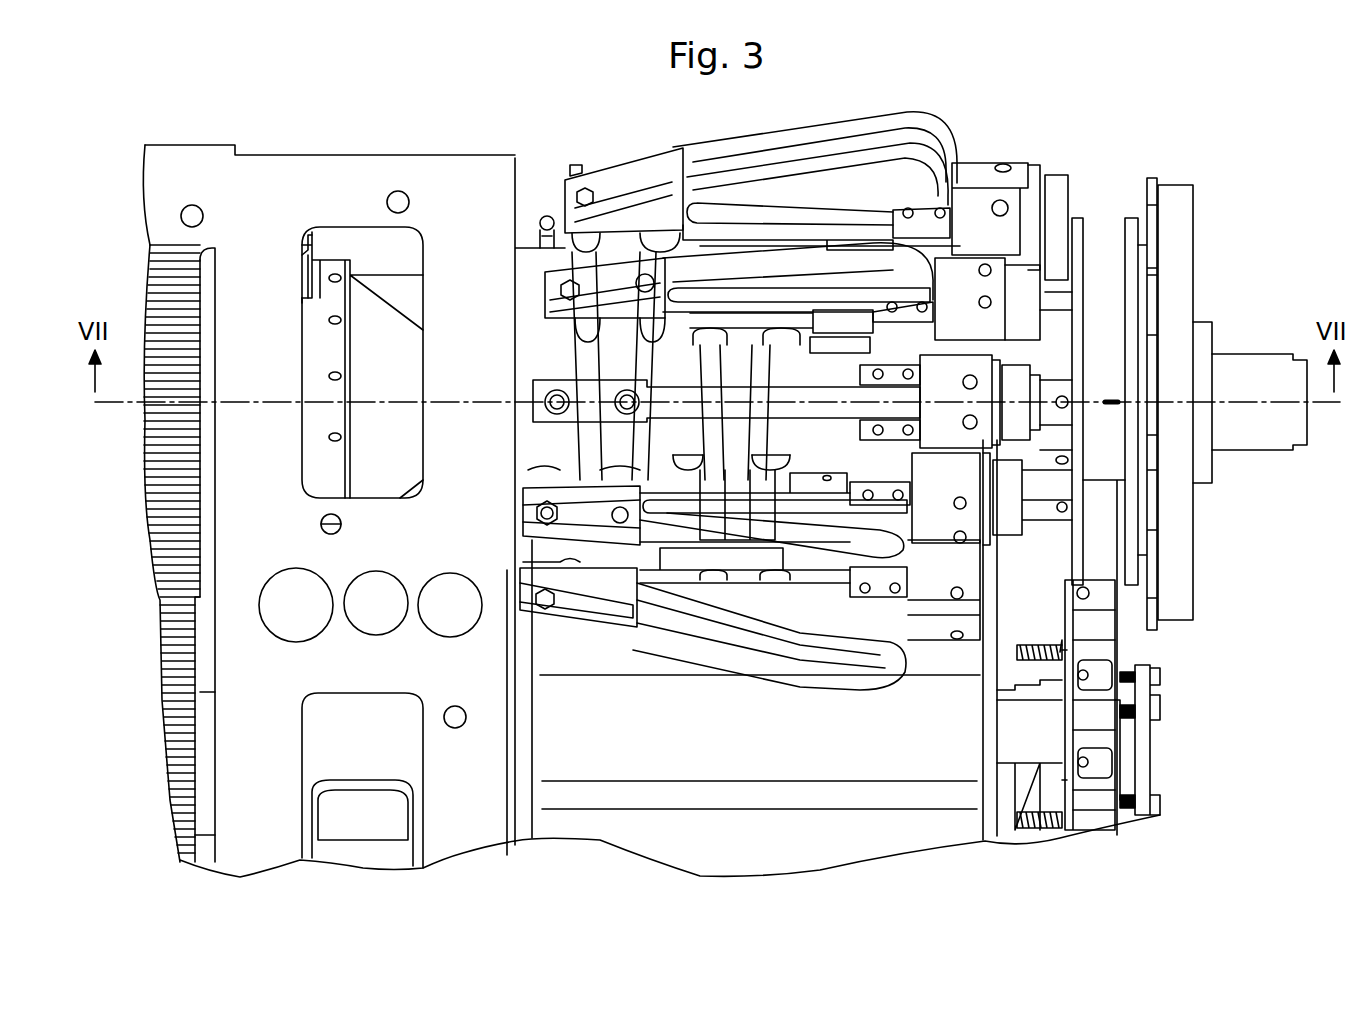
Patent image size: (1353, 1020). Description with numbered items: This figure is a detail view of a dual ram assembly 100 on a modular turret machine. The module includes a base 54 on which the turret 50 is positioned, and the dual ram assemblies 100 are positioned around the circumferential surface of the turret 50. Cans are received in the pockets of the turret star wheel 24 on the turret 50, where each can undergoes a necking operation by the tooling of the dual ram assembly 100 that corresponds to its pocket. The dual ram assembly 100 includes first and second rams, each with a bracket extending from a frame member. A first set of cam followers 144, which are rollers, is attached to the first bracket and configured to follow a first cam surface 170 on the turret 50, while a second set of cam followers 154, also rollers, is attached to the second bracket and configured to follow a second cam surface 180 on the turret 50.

The base 54 is at (300, 170).
The turret 50 is at (530, 255).
The turret star wheel 24 is at (1100, 215).
The first cam surface 170 is at (597, 352).
The second cam surface 180 is at (738, 452).
The first set of cam followers 144 is at (528, 472).
The second set of cam followers 154 is at (737, 600).
The dual ram assembly 100 is at (796, 690).